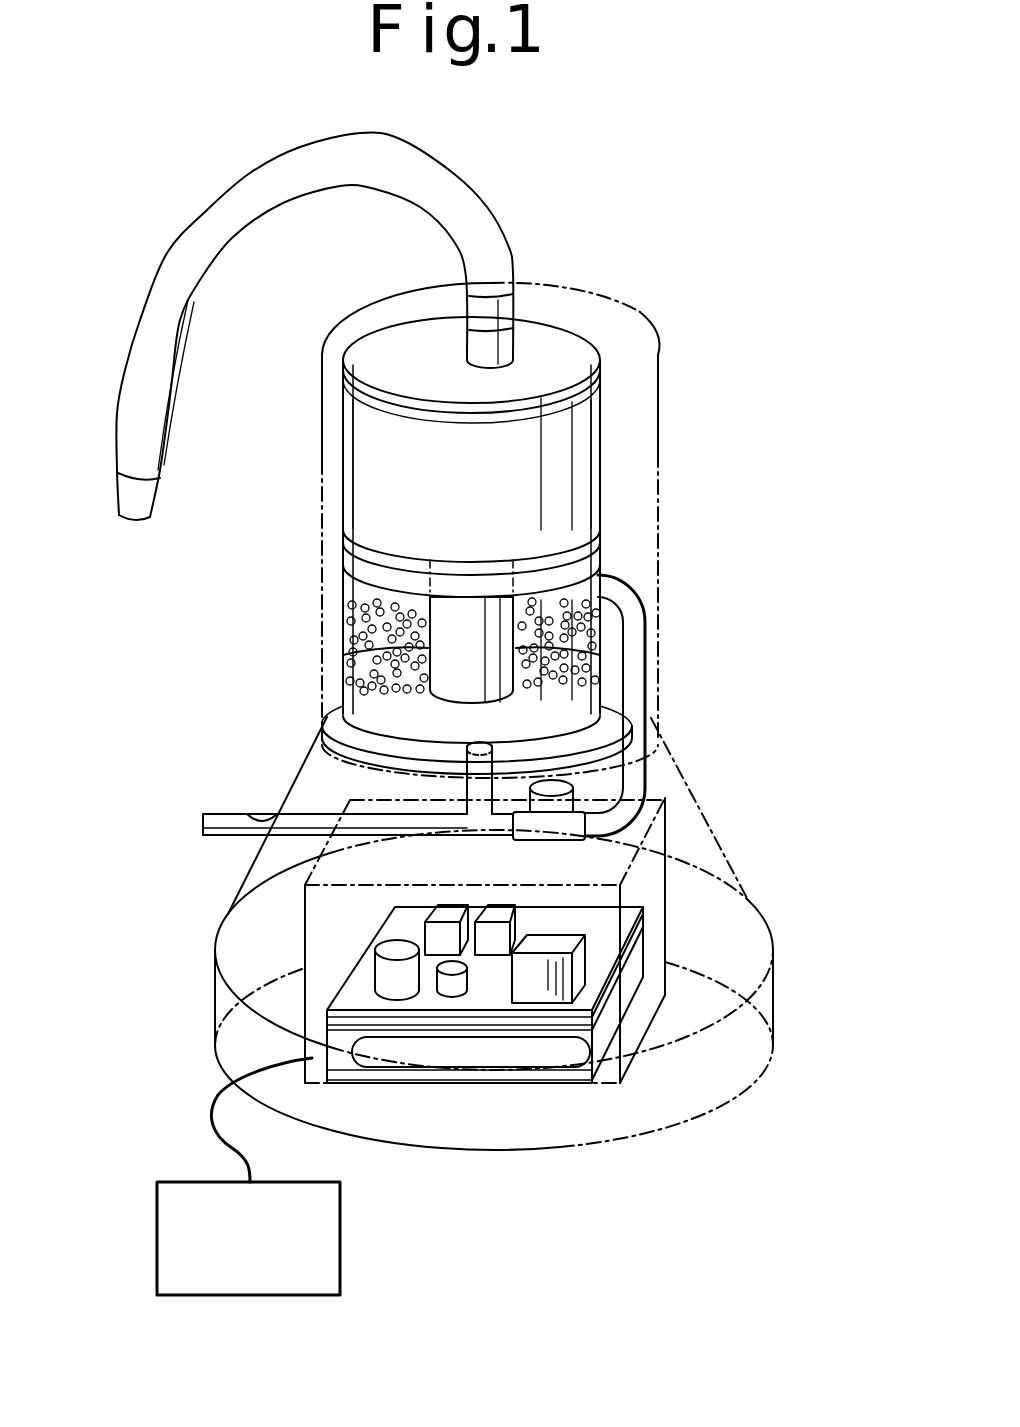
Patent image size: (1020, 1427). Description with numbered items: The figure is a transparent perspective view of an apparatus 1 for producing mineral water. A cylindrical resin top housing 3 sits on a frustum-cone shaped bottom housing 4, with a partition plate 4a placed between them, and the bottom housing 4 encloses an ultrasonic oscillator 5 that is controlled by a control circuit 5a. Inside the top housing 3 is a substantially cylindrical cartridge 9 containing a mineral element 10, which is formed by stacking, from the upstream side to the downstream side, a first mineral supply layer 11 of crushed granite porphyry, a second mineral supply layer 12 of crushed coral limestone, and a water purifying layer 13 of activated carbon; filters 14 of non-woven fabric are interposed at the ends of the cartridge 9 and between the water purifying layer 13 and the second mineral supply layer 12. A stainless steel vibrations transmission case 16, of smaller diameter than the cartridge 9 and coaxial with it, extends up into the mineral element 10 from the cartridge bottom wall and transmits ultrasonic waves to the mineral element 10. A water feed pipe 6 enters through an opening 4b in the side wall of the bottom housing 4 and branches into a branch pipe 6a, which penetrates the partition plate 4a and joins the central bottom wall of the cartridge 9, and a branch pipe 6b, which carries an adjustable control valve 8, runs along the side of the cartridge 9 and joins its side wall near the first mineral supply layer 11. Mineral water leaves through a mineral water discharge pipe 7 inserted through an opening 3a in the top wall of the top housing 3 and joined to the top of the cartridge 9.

The apparatus for producing a mineral water 1 is at (647, 289).
The top housing 3 is at (347, 320).
The opening 3a is at (497, 343).
The bottom housing 4 is at (230, 903).
The partition plate 4a is at (337, 743).
The opening 4b is at (257, 822).
The ultrasonic oscillator 5 is at (493, 997).
The control circuit 5a is at (342, 1240).
The water feed pipe 6 is at (203, 836).
The branch pipe 6a is at (467, 802).
The branch pipe 6b is at (556, 786).
The mineral water discharge pipe 7 is at (210, 217).
The control valve 8 is at (578, 842).
The cartridge 9 is at (600, 348).
The mineral element 10 is at (226, 461).
The first mineral supply layer 11 is at (343, 656).
The second mineral supply layer 12 is at (343, 568).
The water purifying layer 13 is at (323, 468).
The filter 14 is at (603, 397).
The vibrations transmission case 16 is at (470, 687).